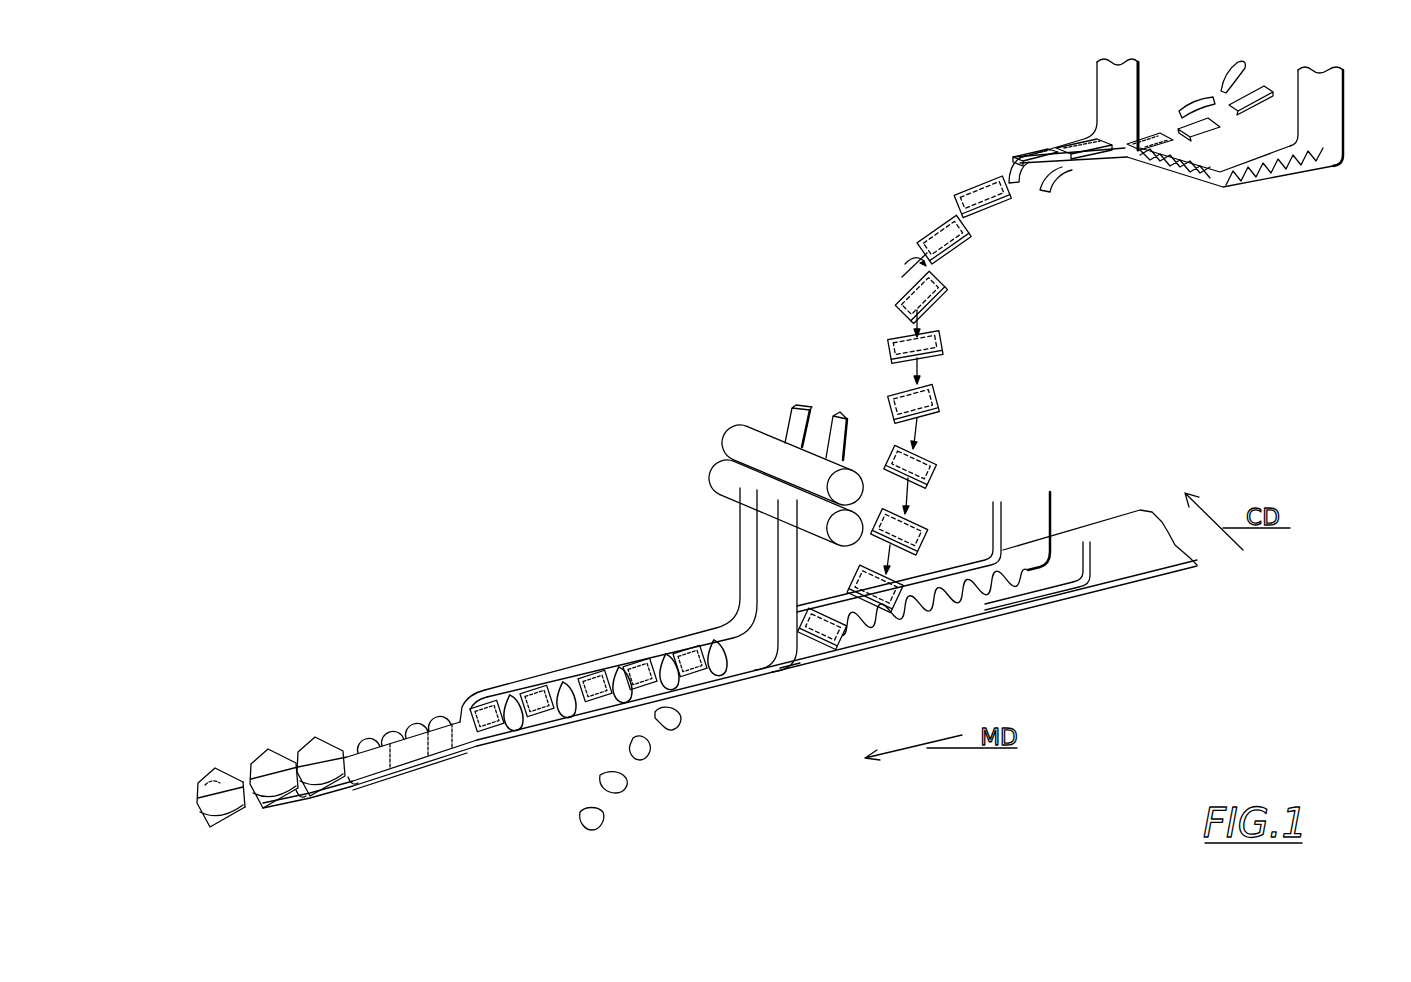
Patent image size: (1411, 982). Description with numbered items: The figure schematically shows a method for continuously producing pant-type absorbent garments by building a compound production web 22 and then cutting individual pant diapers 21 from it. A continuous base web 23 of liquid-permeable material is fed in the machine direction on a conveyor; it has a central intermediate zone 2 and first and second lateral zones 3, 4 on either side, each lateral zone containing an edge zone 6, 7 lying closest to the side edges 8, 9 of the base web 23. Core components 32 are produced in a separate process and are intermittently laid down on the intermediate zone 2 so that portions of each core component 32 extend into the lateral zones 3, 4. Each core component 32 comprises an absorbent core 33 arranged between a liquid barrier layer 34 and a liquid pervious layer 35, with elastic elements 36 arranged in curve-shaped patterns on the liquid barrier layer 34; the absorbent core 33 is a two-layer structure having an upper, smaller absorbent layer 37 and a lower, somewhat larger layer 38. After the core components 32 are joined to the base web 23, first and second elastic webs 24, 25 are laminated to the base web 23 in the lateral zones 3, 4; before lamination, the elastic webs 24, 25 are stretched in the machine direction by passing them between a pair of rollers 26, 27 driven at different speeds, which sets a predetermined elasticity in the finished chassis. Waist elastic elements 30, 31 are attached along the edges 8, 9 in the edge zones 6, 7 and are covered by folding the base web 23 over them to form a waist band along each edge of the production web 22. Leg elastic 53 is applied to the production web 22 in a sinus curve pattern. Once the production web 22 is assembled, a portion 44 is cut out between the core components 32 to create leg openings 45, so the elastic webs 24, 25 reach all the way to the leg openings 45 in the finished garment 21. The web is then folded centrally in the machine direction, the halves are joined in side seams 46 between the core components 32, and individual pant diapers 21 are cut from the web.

The intermediate zone 2 is at (580, 707).
The first lateral zone 3 is at (550, 688).
The second lateral zone 4 is at (522, 727).
The first edge zone 6 is at (698, 642).
The second edge zone 7 is at (887, 640).
The first side edge 8 is at (625, 645).
The second side edge 9 is at (787, 666).
The pant diaper 21 is at (248, 803).
The compound production web 22 is at (460, 717).
The continuous base web 23 is at (1068, 552).
The first elastic web 24 is at (797, 415).
The second elastic web 25 is at (840, 413).
The first roller 26 is at (725, 477).
The second roller 27 is at (745, 445).
The first waist elastic element 30 is at (1005, 512).
The second waist elastic element 31 is at (1093, 552).
The core component 32 is at (930, 337).
The absorbent core 33 is at (1145, 148).
The liquid barrier layer 34 is at (1230, 173).
The liquid pervious layer 35 is at (1108, 92).
The elastic elements 36 is at (1345, 116).
The upper absorbent layer 37 is at (1226, 92).
The lower absorbent layer 38 is at (1258, 100).
The cut-out portion 44 is at (648, 750).
The leg opening 45 is at (233, 782).
The side seam 46 is at (352, 783).
The leg elastic 53 is at (1055, 500).